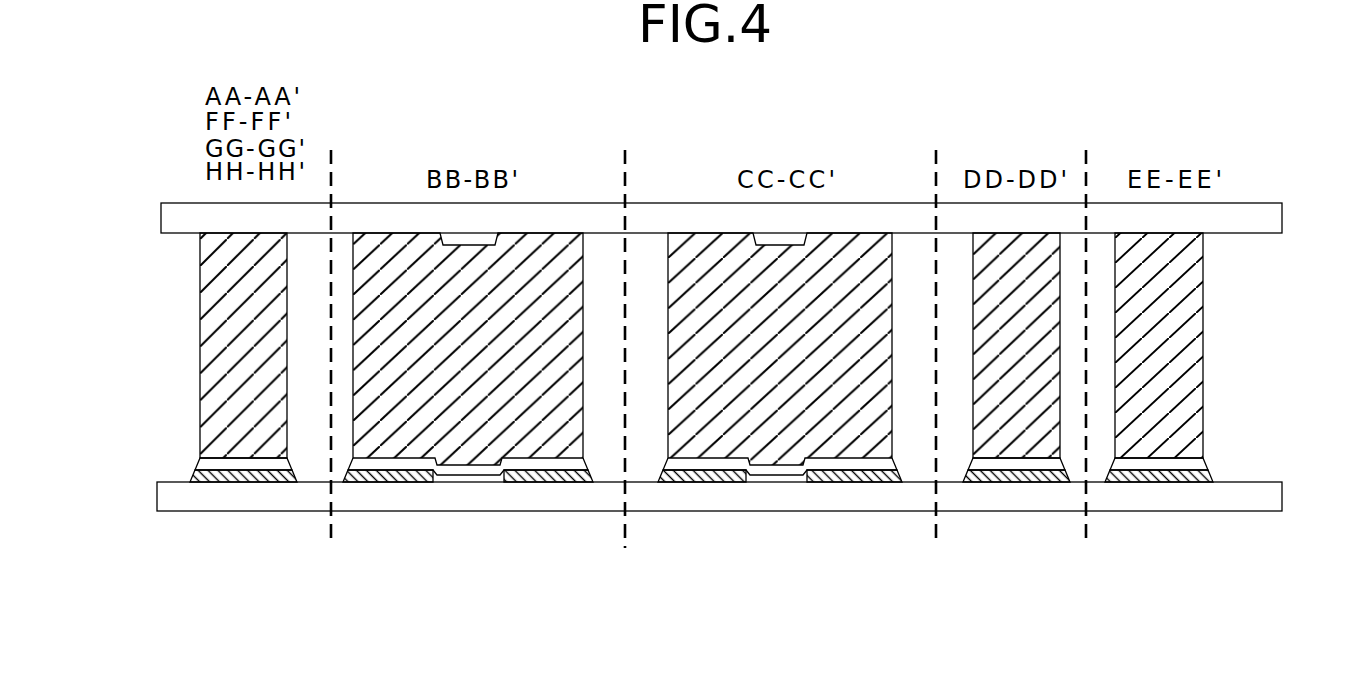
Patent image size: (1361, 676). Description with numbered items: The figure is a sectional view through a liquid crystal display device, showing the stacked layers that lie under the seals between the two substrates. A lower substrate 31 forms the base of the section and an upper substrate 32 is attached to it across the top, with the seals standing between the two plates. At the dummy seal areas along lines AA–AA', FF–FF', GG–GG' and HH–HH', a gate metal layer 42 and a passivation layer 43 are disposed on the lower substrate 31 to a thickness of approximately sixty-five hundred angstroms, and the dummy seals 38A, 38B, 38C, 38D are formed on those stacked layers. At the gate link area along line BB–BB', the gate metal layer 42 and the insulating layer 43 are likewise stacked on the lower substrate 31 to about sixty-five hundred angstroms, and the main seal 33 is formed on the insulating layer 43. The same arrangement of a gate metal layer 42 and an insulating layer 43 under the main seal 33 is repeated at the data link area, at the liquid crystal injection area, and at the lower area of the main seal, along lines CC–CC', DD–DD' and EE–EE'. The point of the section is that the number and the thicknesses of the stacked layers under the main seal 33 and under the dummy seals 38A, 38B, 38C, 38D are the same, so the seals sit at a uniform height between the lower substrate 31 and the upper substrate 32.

The lower substrate 31 is at (1282, 498).
The upper substrate 32 is at (1282, 216).
The main seal 33 is at (352, 332).
The dummy seal 38A is at (200, 330).
The dummy seal 38B is at (351, 349).
The dummy seal 38C is at (478, 349).
The dummy seal 38D is at (662, 345).
The gate metal layer 42 is at (247, 469).
The passivation layer (gate-insulating layer) 43 is at (268, 477).